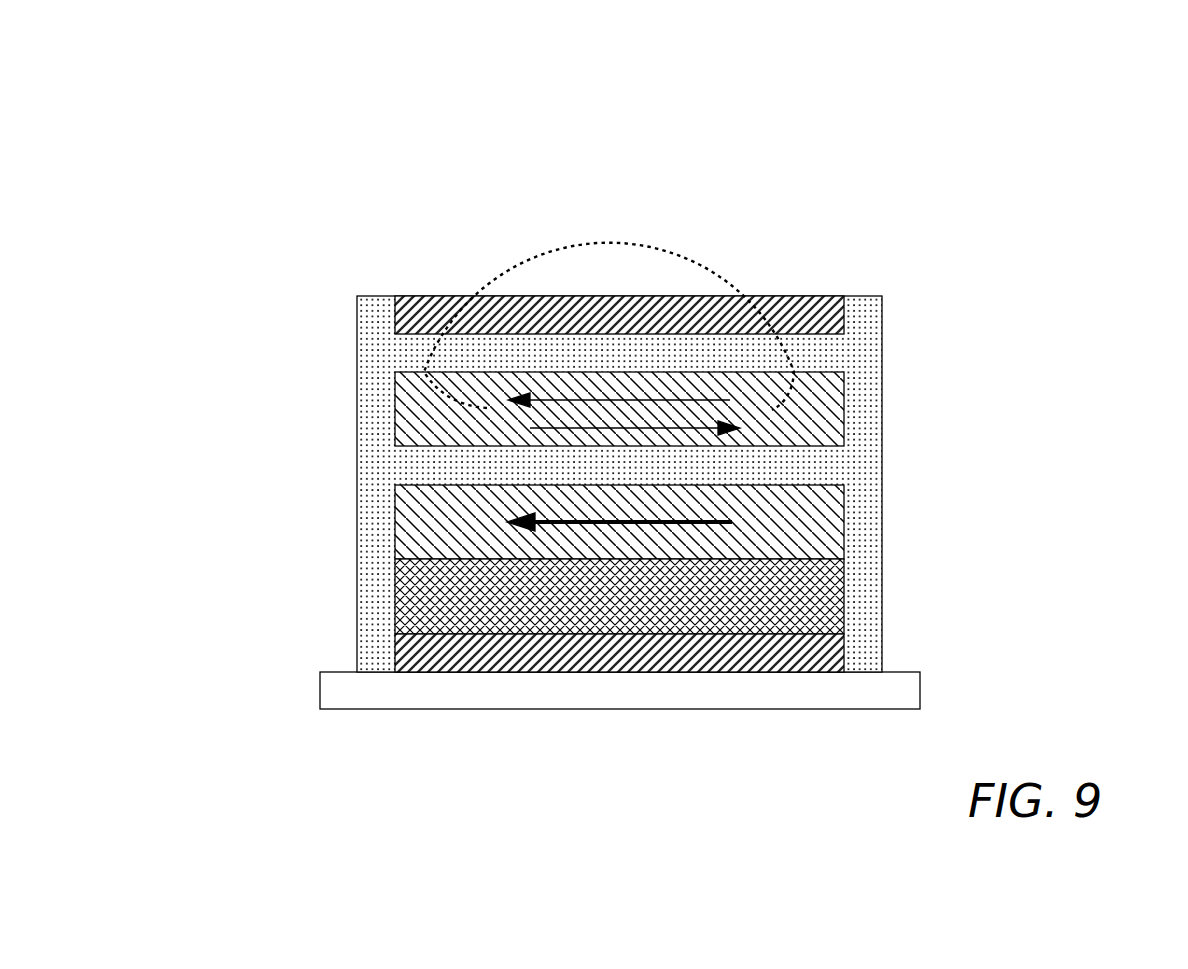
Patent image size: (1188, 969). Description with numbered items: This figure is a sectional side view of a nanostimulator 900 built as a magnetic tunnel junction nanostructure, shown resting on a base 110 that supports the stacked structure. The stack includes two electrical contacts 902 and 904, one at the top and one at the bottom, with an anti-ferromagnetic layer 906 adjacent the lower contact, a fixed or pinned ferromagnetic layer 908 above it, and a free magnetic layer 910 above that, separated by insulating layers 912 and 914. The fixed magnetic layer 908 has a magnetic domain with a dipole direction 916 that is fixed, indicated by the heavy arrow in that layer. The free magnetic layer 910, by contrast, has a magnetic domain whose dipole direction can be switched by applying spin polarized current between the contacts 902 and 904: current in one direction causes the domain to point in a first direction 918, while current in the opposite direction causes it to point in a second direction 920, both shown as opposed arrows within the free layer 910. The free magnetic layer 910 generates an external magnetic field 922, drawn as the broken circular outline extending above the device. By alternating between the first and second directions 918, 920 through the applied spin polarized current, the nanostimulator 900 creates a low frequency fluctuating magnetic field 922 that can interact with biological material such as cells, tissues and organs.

The substrate 110 is at (338, 692).
The nanostimulator 900 is at (1030, 242).
The electrical contact 902 is at (830, 296).
The electrical contact 904 is at (840, 657).
The anti-ferromagnetic layer 906 is at (832, 603).
The fixed or pinned ferromagnetic layer 908 is at (832, 528).
The free magnetic layer 910 is at (832, 417).
The insulating layer 912 is at (825, 352).
The insulating layer 914 is at (832, 462).
The dipole direction 916 is at (560, 520).
The first direction 918 is at (535, 395).
The second direction 920 is at (530, 428).
The external magnetic field 922 is at (600, 108).